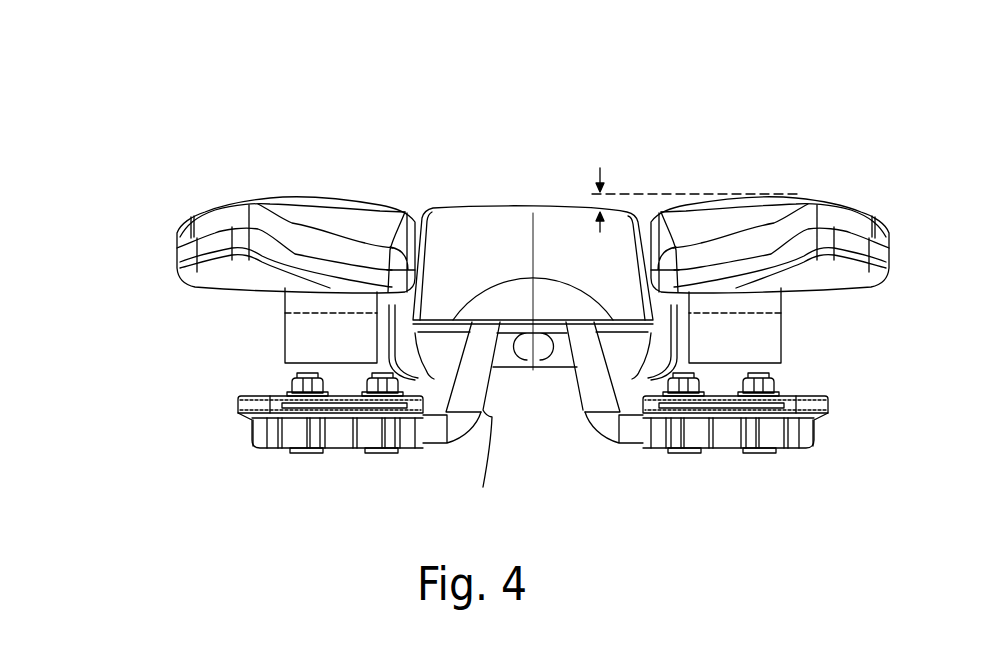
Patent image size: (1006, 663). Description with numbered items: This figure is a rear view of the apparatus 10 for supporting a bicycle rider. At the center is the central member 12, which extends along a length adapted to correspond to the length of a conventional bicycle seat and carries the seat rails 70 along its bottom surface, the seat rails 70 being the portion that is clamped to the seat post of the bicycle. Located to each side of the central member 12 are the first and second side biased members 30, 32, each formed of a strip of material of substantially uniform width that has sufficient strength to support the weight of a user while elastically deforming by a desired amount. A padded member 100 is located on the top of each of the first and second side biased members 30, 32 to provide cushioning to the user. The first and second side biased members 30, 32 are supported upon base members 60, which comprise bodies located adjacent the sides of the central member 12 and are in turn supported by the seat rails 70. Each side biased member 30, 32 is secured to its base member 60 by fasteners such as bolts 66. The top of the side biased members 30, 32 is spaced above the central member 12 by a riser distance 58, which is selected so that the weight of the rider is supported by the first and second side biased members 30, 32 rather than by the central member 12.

The apparatus for supporting a bicycle rider 10 is at (804, 80).
The central member 12 is at (488, 208).
The first side biased member 30 is at (782, 327).
The second side biased member 32 is at (284, 327).
The riser distance 58 is at (611, 172).
The base member 60 is at (243, 416).
The bolt 66 is at (306, 371).
The seat rail 70 is at (578, 404).
The padded member 100 is at (180, 243).